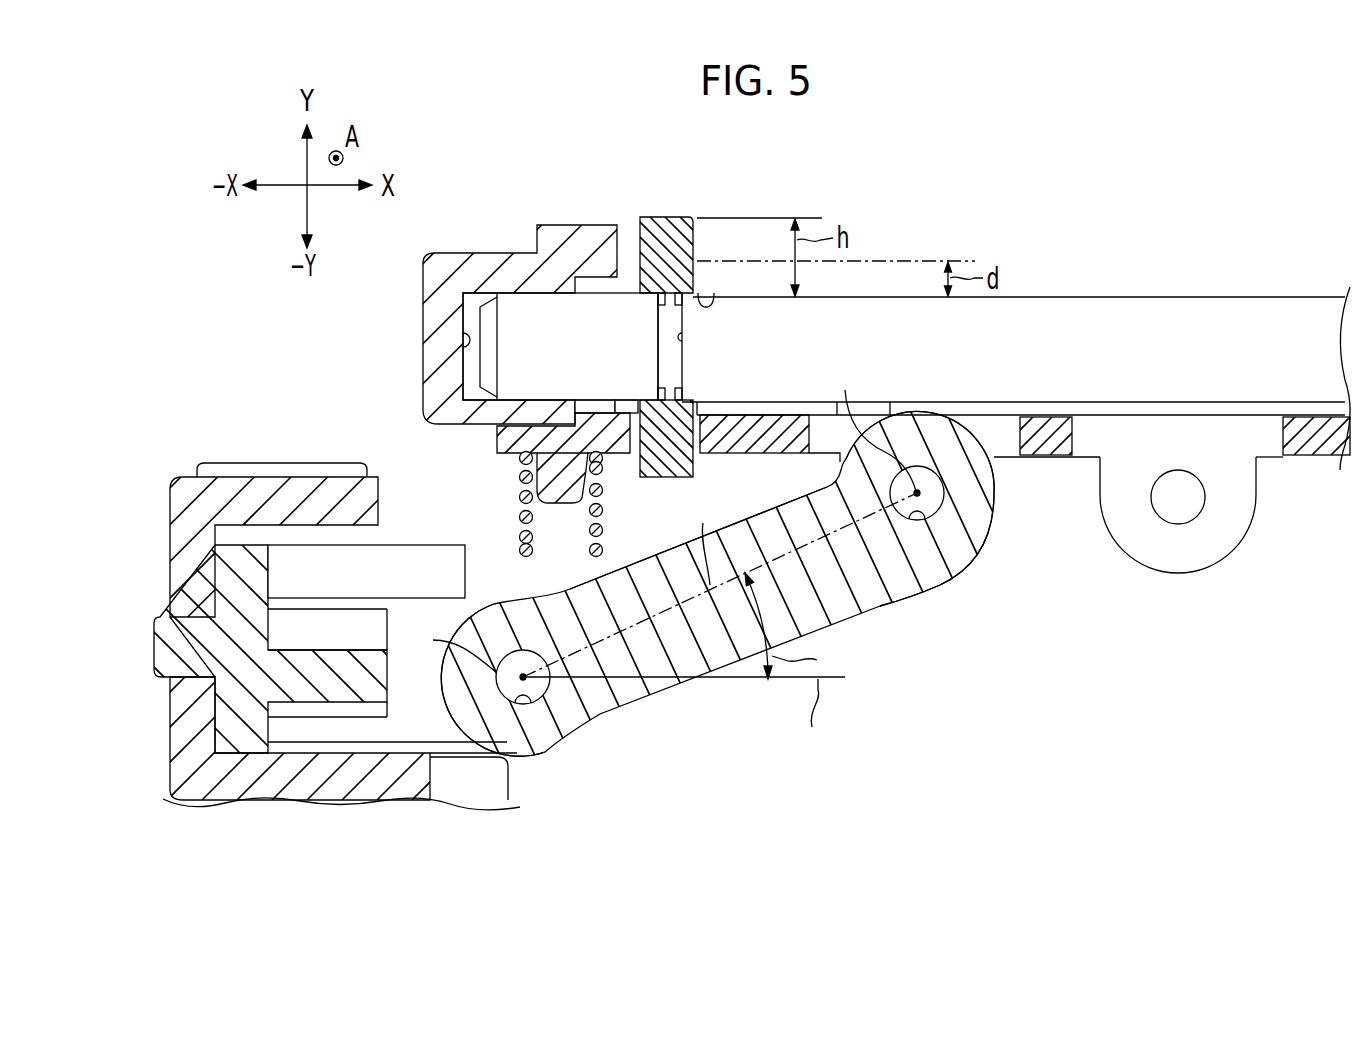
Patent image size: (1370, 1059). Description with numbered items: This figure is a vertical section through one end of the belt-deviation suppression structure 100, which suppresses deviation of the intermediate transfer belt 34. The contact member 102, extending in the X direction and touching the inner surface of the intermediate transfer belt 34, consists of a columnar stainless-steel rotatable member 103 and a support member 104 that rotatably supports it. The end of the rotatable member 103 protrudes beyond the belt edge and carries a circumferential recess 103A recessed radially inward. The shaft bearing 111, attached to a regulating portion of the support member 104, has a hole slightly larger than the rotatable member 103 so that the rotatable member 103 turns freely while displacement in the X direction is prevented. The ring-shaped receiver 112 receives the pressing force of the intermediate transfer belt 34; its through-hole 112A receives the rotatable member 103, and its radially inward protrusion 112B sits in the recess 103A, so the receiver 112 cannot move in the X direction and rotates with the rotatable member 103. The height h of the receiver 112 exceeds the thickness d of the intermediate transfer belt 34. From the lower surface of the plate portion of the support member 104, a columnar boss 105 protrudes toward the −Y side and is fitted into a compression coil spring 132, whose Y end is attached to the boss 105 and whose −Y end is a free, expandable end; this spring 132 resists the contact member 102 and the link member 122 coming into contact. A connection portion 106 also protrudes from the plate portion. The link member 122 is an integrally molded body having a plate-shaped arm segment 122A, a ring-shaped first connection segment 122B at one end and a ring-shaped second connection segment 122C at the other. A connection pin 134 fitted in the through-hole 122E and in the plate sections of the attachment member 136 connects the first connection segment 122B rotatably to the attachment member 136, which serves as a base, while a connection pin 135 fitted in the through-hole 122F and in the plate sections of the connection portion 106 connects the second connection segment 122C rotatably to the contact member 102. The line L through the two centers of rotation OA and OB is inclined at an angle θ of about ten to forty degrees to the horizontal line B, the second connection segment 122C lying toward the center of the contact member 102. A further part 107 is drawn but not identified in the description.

The belt-deviation suppression structure 100 is at (962, 166).
The contact member 102 is at (1212, 240).
The rotatable member 103 is at (1210, 347).
The recess 103A is at (681, 337).
The support member 104 is at (1303, 438).
The boss 105 is at (557, 503).
The connection portion 106 is at (995, 458).
The bracket 107 is at (1230, 530).
The shaft bearing 111 is at (427, 262).
The receiver 112 is at (667, 214).
The through-hole 112A is at (709, 292).
The protrusion 112B is at (660, 296).
The link member 122 is at (667, 698).
The arm segment 122A is at (857, 607).
The first connection segment 122B is at (548, 745).
The second connection segment 122C is at (968, 537).
The through-hole 122E is at (525, 703).
The through-hole 122F is at (919, 520).
The compression coil spring 132 is at (518, 518).
The connection pin 134 is at (520, 660).
The connection pin 135 is at (927, 478).
The attachment member 136 is at (300, 462).
The intermediate transfer belt 34 is at (868, 262).